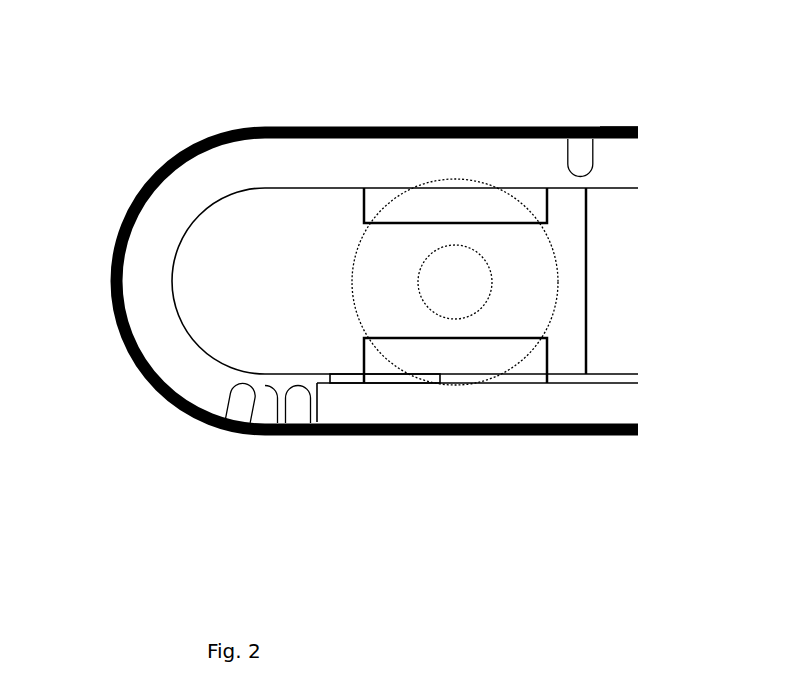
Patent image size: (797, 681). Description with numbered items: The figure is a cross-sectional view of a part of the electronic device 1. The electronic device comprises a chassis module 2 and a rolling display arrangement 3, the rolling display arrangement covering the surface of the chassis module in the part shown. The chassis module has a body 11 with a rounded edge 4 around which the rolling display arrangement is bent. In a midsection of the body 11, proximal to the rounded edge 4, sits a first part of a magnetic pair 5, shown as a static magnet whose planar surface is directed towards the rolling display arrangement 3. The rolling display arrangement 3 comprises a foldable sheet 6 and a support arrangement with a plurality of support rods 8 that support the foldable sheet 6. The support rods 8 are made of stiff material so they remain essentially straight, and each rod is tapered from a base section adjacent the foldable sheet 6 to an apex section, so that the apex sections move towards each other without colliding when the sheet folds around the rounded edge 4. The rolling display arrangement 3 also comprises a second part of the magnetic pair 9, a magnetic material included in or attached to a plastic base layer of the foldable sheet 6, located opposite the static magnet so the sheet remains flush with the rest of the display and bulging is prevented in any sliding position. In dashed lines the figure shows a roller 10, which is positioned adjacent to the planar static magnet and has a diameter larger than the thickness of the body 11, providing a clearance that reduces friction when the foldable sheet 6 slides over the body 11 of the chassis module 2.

The electronic device 1 is at (411, 112).
The chassis module 2 is at (622, 300).
The rolling display arrangement 3 is at (468, 128).
The rounded edge 4 is at (178, 238).
The first part of a magnetic pair 5 is at (375, 362).
The foldable sheet 6 is at (638, 128).
The support rods 8 is at (573, 168).
The second part of the magnetic pair 9 is at (638, 136).
The roller 10 is at (447, 380).
The body 11 is at (245, 297).